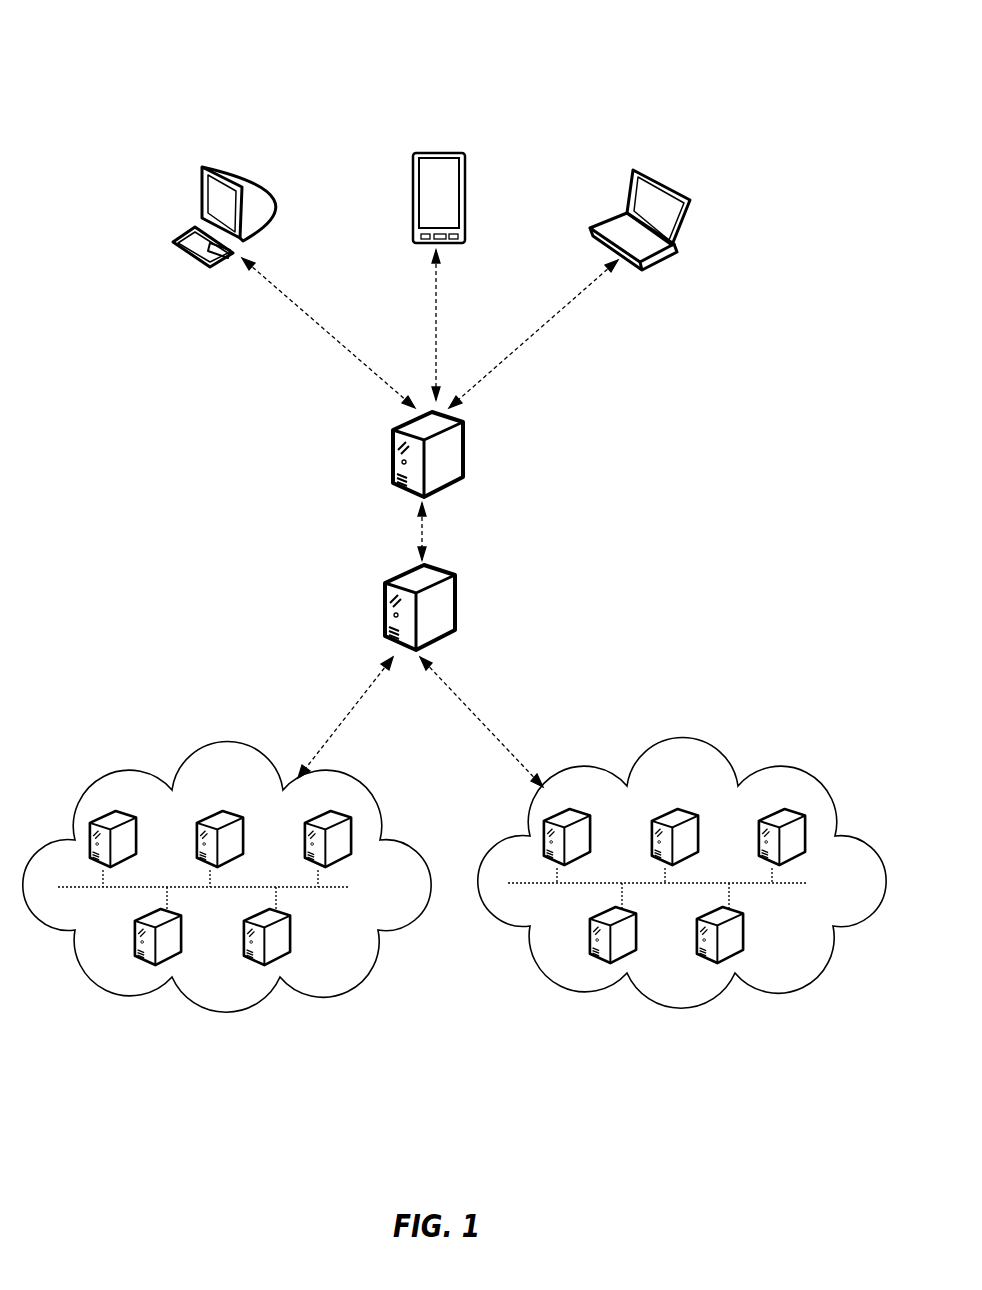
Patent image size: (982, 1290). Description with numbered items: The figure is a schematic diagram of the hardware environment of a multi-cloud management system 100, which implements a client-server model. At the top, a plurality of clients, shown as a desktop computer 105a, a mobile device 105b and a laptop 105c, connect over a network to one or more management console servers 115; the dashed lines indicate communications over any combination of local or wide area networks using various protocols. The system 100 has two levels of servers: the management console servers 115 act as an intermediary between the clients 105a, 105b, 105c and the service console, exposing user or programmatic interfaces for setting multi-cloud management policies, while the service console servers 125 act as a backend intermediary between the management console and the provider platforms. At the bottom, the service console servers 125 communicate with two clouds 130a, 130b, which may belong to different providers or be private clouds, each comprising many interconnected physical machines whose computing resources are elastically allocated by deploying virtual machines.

The multi-cloud management system 100 is at (882, 41).
The desktop computer 105a is at (250, 148).
The mobile device 105b is at (465, 146).
The laptop 105c is at (670, 150).
The management console servers 115 is at (678, 441).
The service console servers 125 is at (665, 586).
The cloud 130a is at (392, 1063).
The cloud 130b is at (859, 1063).